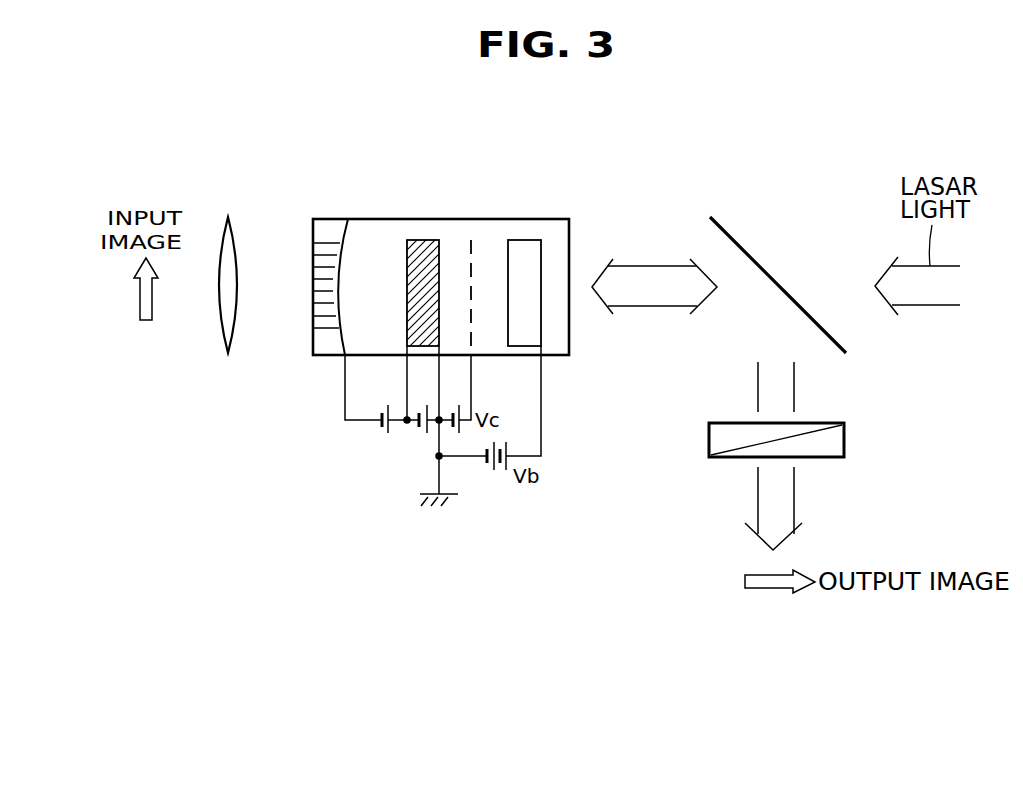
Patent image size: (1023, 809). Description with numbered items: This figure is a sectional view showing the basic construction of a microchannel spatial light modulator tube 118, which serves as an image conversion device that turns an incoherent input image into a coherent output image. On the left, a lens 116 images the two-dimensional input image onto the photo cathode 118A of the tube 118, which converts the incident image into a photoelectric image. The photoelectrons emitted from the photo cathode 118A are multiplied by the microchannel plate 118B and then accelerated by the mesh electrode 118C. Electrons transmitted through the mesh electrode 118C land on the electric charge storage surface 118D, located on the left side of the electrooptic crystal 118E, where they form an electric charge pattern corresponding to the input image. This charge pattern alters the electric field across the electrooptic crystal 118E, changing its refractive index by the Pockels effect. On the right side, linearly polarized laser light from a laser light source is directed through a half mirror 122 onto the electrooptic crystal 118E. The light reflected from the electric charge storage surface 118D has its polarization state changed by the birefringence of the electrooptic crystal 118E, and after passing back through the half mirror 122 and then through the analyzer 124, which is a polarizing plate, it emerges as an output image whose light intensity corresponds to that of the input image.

The lens 116 is at (229, 218).
The microchannel spatial light modulator tube 118 is at (515, 155).
The photo cathode 118A is at (338, 243).
The microchannel plate 118B is at (416, 240).
The mesh electrode 118C is at (471, 242).
The electric charge storage surface 118D is at (506, 248).
The electrooptic crystal 118E is at (545, 252).
The half mirror 122 is at (753, 260).
The analyzer 124 is at (847, 440).